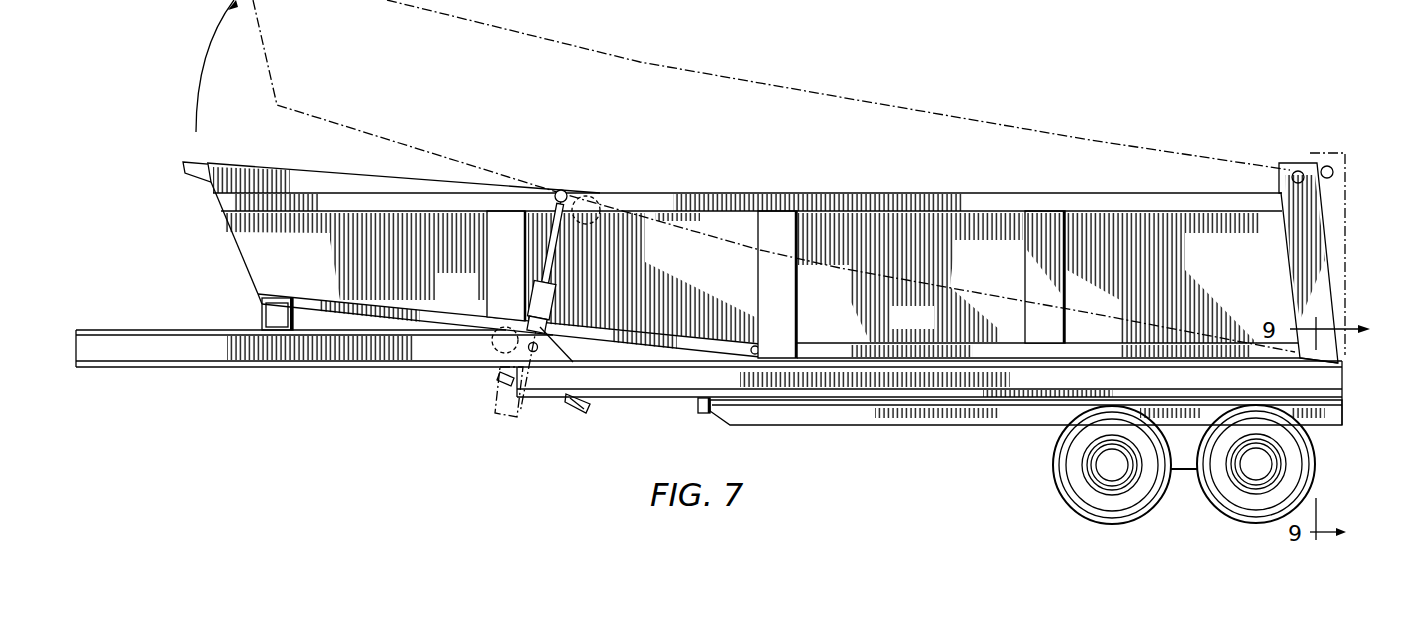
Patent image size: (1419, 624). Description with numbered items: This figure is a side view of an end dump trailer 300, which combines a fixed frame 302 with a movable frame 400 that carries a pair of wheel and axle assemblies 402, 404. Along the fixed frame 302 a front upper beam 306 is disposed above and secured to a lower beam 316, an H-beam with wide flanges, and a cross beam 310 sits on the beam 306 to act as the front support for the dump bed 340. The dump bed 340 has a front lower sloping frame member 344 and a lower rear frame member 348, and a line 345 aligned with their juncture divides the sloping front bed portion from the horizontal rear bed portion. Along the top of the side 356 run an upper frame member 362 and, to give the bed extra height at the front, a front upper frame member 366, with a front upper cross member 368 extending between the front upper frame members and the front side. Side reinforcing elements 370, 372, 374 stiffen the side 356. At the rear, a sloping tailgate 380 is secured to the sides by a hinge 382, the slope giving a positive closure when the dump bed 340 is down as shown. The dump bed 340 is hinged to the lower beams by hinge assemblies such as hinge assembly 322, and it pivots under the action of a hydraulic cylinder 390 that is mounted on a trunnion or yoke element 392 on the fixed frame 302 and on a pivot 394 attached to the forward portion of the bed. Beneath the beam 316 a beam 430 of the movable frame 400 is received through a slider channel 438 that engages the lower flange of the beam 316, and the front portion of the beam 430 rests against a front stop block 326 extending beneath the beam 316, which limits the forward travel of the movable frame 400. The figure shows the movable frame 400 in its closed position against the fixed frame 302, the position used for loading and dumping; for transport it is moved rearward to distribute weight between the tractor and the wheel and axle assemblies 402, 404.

The end dump trailer 300 is at (754, 183).
The fixed frame 302 is at (724, 408).
The front upper beam 306 is at (237, 348).
The cross beam 310 is at (260, 303).
The lower beam 316 is at (540, 395).
The hinge assembly 322 is at (1340, 364).
The front stop block 326 is at (698, 410).
The dump bed 340 is at (233, 265).
The front lower sloping frame member 344 is at (354, 268).
The line 345 is at (762, 348).
The lower rear frame member 348 is at (932, 321).
The side 356 is at (1124, 236).
The upper frame member 362 is at (721, 176).
The front upper frame member 366 is at (336, 176).
The front upper cross member 368 is at (193, 160).
The side reinforcing element 370 is at (497, 247).
The side reinforcing element 372 is at (767, 274).
The side reinforcing element 374 is at (1040, 244).
The tailgate 380 is at (1314, 303).
The hinge 382 is at (1328, 164).
The hydraulic cylinder 390 is at (493, 407).
The trunnion or yoke element 392 is at (546, 337).
The pivot 394 is at (561, 190).
The movable frame 400 is at (944, 442).
The wheel and axle assembly 402 is at (1052, 468).
The wheel and axle assembly 404 is at (1352, 442).
The beam 430 is at (808, 414).
The slider channel 438 is at (718, 382).